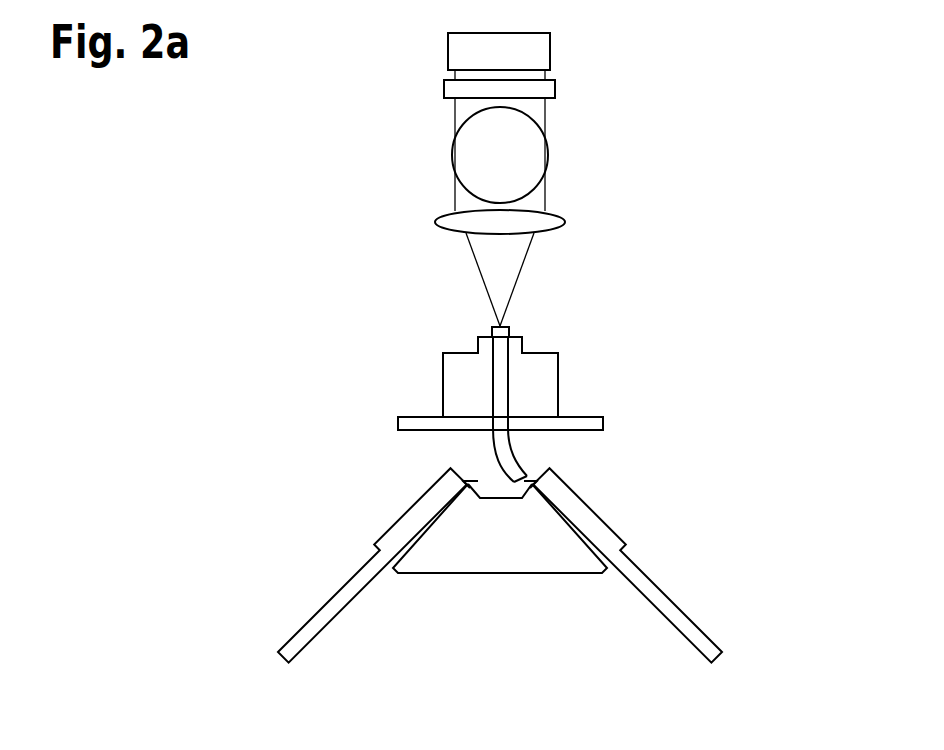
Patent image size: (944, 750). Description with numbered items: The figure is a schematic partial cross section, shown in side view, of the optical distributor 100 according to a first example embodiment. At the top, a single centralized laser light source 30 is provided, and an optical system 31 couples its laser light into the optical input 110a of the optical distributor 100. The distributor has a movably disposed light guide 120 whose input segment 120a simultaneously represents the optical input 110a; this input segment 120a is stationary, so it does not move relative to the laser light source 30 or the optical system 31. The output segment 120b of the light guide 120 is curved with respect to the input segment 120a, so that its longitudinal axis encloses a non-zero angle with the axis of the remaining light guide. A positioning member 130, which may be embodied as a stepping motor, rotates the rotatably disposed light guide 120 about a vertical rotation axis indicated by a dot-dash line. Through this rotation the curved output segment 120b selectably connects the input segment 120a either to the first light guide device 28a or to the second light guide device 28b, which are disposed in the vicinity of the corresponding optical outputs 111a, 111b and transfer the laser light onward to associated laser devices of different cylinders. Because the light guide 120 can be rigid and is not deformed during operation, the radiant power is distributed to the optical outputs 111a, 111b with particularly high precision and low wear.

The laser light source 30 is at (548, 50).
The optical system 31 is at (572, 82).
The optical distributor 100 is at (475, 460).
The optical input 110a is at (533, 315).
The optical output 111a is at (538, 480).
The optical output 111b is at (462, 480).
The light guide 120 is at (500, 440).
The input segment 120a is at (473, 327).
The output segment 120b is at (518, 450).
The positioning member 130 is at (580, 388).
The first light guide device 28a is at (652, 592).
The second light guide device 28b is at (348, 592).